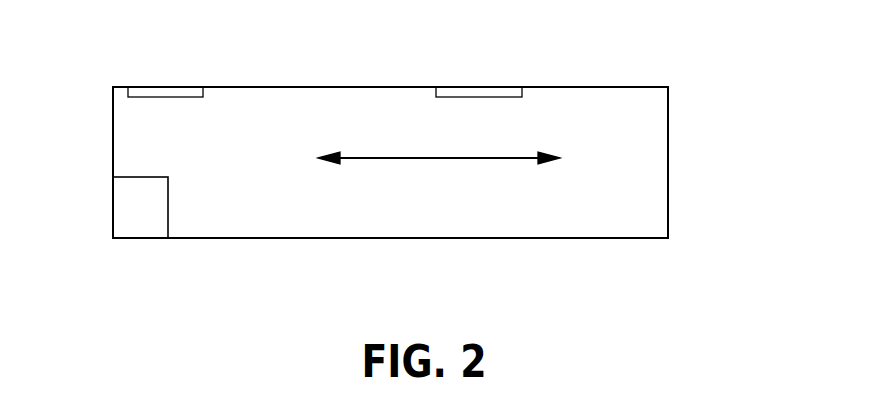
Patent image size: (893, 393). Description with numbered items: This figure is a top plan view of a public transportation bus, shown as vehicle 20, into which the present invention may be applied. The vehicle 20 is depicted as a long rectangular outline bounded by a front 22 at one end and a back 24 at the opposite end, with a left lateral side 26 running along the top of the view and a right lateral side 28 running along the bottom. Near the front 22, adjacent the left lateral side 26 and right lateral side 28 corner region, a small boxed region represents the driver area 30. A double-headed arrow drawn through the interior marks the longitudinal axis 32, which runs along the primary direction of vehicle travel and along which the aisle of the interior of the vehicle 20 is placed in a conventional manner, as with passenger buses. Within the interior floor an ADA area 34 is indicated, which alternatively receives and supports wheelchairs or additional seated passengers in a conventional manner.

The vehicle 20 is at (555, 260).
The front 22 is at (113, 147).
The back 24 is at (668, 159).
The left lateral side 26 is at (316, 87).
The right lateral side 28 is at (285, 238).
The driver area 30 is at (140, 202).
The longitudinal axis 32 is at (420, 158).
The ADA area 34 is at (209, 158).